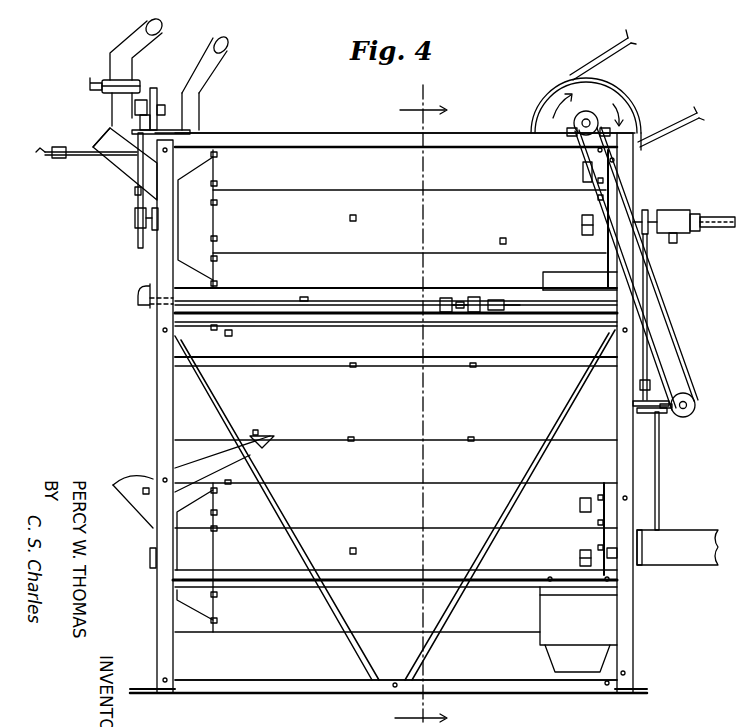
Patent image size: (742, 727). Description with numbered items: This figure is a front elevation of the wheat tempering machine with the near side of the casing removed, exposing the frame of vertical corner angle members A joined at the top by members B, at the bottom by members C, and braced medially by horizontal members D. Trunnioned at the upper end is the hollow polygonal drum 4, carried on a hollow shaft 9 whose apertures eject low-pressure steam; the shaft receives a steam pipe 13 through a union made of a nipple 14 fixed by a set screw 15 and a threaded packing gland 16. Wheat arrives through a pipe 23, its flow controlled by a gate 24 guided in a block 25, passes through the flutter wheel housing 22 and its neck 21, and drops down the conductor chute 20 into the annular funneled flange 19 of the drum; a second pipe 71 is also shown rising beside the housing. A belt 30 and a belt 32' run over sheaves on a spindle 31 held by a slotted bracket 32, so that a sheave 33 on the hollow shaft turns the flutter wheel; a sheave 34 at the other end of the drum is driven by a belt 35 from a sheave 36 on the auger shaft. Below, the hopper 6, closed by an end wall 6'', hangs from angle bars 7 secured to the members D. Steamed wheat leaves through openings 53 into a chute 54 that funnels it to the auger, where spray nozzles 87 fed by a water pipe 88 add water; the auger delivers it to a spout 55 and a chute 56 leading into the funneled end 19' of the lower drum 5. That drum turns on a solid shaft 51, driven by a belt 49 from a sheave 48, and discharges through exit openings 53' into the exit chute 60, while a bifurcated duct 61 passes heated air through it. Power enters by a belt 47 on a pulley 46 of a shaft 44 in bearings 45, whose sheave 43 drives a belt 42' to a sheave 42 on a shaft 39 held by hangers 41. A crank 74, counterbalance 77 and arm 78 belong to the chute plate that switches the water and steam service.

The drum 4 is at (318, 219).
The drum 5 is at (372, 552).
The hopper 6 is at (396, 388).
The end wall 6'' is at (217, 344).
The angle bars 7 is at (333, 318).
The hollow shaft 9 is at (133, 220).
The steam pipe 13 is at (716, 218).
The nipple 14 is at (672, 212).
The set screw 15 is at (673, 244).
The packing gland 16 is at (700, 238).
The annular funneled flange 19 is at (168, 219).
The funneled end 19' is at (216, 556).
The conductor chute 20 is at (120, 172).
The neck 21 is at (110, 130).
The flutter wheel housing 22 is at (118, 106).
The pipe 23 is at (127, 48).
The gate 24 is at (90, 85).
The block 25 is at (110, 80).
The belt 30 is at (153, 88).
The spindle 31 is at (190, 108).
The slotted bracket 32 is at (174, 115).
The belt 32' is at (125, 192).
The sheave 33 is at (150, 230).
The sheave 34 is at (646, 210).
The belt 35 is at (644, 386).
The sheave 36 is at (633, 401).
The shaft 39 is at (696, 404).
The hangers 41 is at (651, 413).
The sheave 42 is at (653, 286).
The belt 42' is at (642, 270).
The sheave 43 is at (590, 110).
The shaft 44 is at (592, 120).
The bearings 45 is at (570, 140).
The pulley 46 is at (655, 128).
The belt 47 is at (619, 48).
The sheave 48 is at (662, 416).
The belt 49 is at (658, 470).
The solid shaft 51 is at (615, 556).
The openings 53 is at (577, 219).
The exit openings 53' is at (573, 529).
The chute 54 is at (550, 270).
The spout 55 is at (195, 460).
The chute 56 is at (127, 491).
The chute 60 is at (596, 613).
The bifurcated duct 61 is at (686, 532).
The pipe 71 is at (226, 50).
The crank 74 is at (141, 159).
The counterbalance 77 is at (58, 159).
The arm 78 is at (42, 157).
The spray nozzles 87 is at (478, 287).
The water pipe 88 is at (296, 301).
The angle members A is at (157, 388).
The members B is at (299, 138).
The members C is at (276, 646).
The members D is at (522, 578).